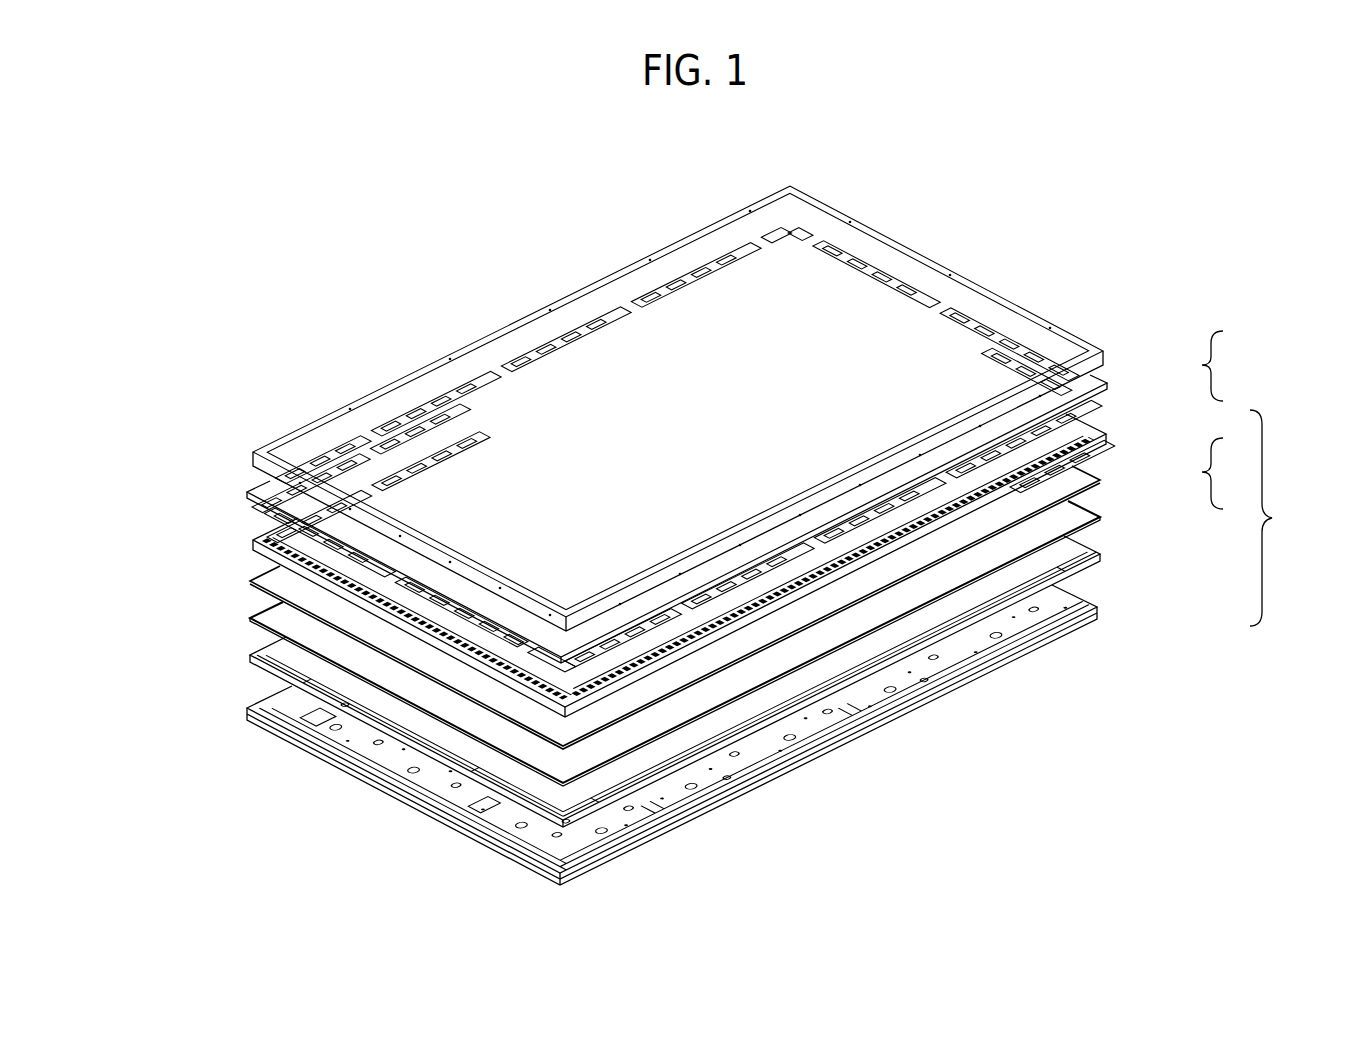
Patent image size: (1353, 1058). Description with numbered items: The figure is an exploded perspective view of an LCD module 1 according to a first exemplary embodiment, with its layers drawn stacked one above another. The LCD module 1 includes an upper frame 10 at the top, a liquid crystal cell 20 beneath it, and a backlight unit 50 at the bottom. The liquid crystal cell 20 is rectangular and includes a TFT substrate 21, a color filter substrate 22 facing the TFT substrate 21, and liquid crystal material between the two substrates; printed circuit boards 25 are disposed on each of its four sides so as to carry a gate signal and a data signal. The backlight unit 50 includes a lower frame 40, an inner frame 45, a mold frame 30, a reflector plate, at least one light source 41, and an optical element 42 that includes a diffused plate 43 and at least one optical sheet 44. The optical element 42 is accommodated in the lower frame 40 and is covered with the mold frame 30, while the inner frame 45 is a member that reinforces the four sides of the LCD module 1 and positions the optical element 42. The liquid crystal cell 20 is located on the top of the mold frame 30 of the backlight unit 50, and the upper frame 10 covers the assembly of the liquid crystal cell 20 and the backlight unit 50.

The LCD module 1 is at (412, 346).
The upper frame 10 is at (1067, 328).
The liquid crystal cell 20 is at (712, 447).
The color filter substrate 22 is at (753, 495).
The TFT substrate 21 is at (1105, 390).
The printed circuit boards 25 is at (264, 536).
The mold frame 30 is at (1106, 440).
The optical element 42 is at (755, 593).
The optical sheet 44 is at (755, 593).
The diffused plate 43 is at (1100, 478).
The light source 41 is at (1100, 518).
The inner frame 45 is at (1100, 563).
The lower frame 40 is at (1100, 607).
The backlight unit 50 is at (782, 582).